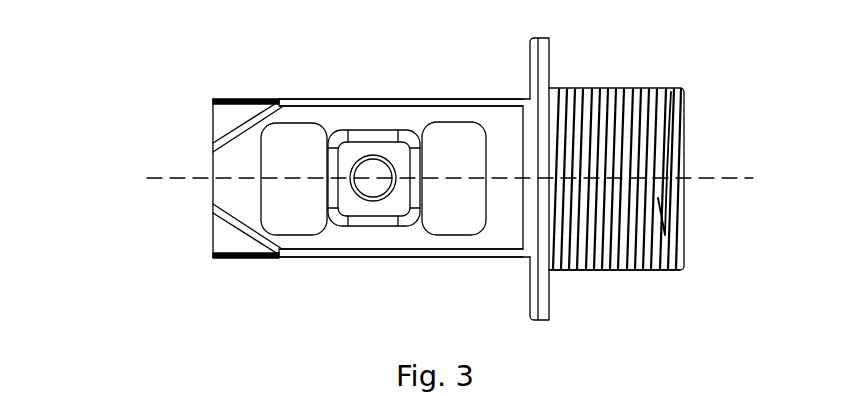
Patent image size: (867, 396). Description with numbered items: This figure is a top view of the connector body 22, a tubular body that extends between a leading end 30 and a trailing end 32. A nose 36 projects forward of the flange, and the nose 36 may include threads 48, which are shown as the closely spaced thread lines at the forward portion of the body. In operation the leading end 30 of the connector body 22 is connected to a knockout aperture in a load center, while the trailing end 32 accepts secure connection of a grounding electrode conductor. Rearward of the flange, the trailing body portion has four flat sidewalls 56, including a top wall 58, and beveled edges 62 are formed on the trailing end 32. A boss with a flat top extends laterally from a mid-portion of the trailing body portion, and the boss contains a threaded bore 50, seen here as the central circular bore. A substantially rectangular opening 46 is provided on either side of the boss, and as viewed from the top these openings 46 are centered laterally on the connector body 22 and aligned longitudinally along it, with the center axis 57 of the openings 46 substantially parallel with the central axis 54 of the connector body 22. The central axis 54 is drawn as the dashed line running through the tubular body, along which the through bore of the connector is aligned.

The connector body 22 is at (106, 103).
The leading end 30 is at (685, 127).
The trailing end 32 is at (211, 194).
The nose 36 is at (668, 272).
The substantially rectangular opening 46 is at (313, 135).
The threads 48 is at (617, 125).
The threaded bore 50 is at (373, 187).
The central axis 54 is at (718, 178).
The flat sidewalls 56 is at (300, 258).
The center axis of the openings 57 is at (454, 177).
The top wall 58 is at (502, 122).
The beveled edges 62 is at (232, 245).